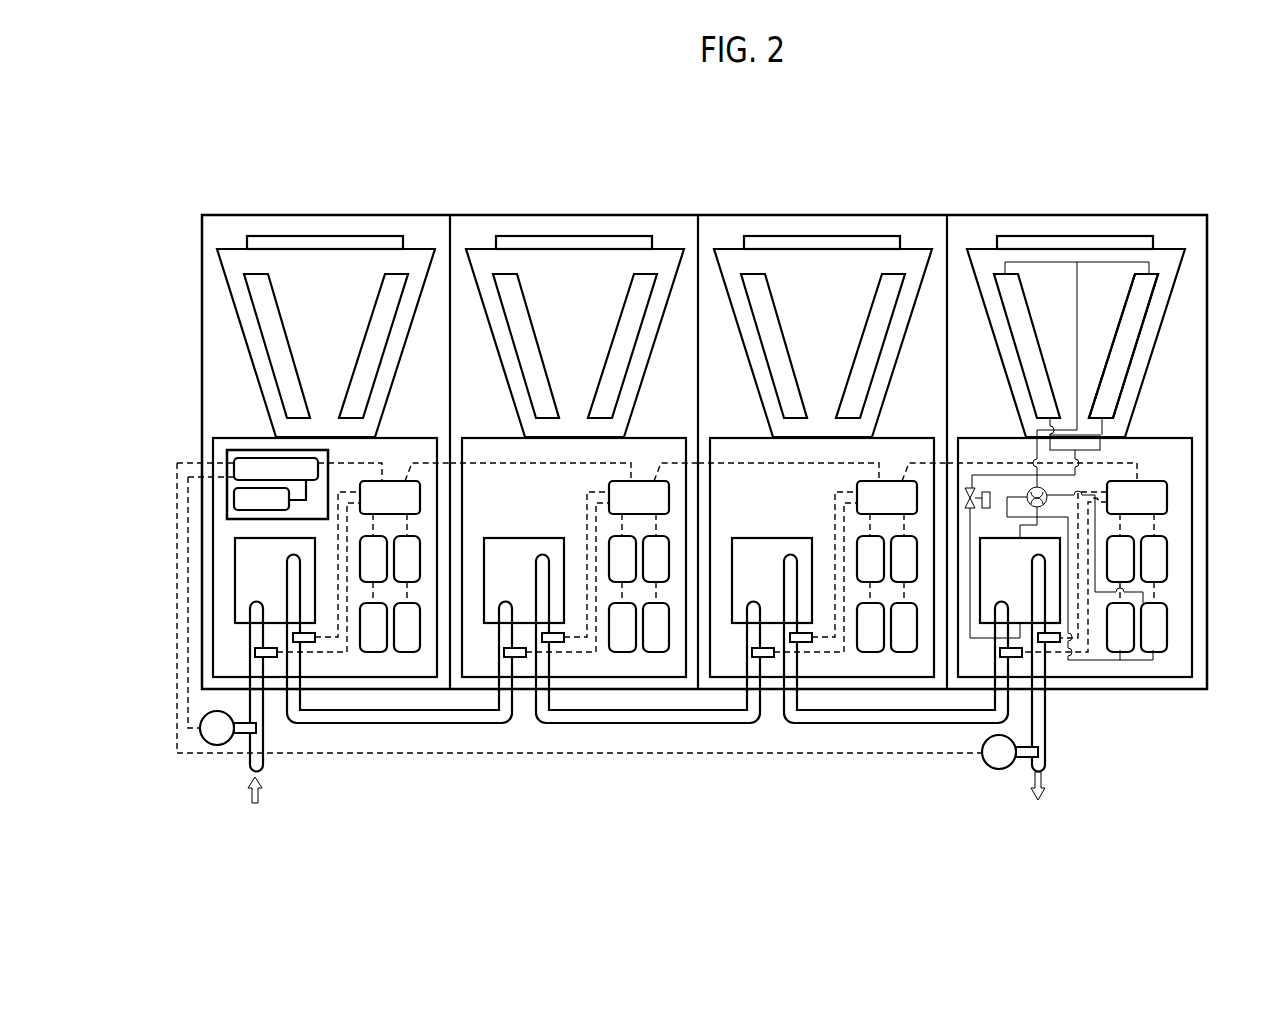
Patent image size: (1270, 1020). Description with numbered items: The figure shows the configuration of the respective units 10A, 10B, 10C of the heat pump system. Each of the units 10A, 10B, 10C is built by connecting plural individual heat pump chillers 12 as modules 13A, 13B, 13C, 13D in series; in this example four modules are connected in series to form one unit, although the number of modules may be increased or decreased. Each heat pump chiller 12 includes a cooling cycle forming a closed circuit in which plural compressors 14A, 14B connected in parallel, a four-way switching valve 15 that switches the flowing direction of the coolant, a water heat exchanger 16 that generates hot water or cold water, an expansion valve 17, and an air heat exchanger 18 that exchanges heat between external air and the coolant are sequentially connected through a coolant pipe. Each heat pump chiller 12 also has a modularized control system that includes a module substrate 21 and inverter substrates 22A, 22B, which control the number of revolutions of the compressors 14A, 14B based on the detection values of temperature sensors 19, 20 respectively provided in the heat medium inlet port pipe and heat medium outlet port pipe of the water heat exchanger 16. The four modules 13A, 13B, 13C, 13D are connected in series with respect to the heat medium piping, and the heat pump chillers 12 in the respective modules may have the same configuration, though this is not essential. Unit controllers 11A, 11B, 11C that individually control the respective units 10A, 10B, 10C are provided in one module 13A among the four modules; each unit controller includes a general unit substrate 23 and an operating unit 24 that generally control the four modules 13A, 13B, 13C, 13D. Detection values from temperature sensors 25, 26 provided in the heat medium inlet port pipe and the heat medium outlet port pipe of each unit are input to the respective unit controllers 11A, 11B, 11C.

The unit 10A is at (692, 128).
The unit 10B is at (704, 452).
The unit 10C is at (704, 452).
The unit controller 11A is at (240, 409).
The unit controller 11B is at (240, 421).
The unit controller 11C is at (228, 446).
The heat pump chiller 12 is at (1185, 334).
The module 13A is at (285, 408).
The module 13B is at (574, 214).
The module 13C is at (822, 214).
The module 13D is at (1108, 436).
The compressor 14A is at (1120, 663).
The compressor 14B is at (1168, 628).
The four-way switching valve 15 is at (1028, 490).
The water heat exchanger 16 is at (1013, 590).
The expansion valve 17 is at (968, 486).
The air heat exchanger 18 is at (1112, 388).
The temperature sensor 19 is at (1013, 659).
The temperature sensor 20 is at (1050, 643).
The module substrate 21 is at (1168, 498).
The inverter substrate 22A is at (1133, 547).
The inverter substrate 22B is at (1168, 566).
The general unit substrate 23 is at (255, 468).
The operating unit 24 is at (243, 500).
The temperature sensor 25 is at (216, 746).
The temperature sensor 26 is at (1000, 770).